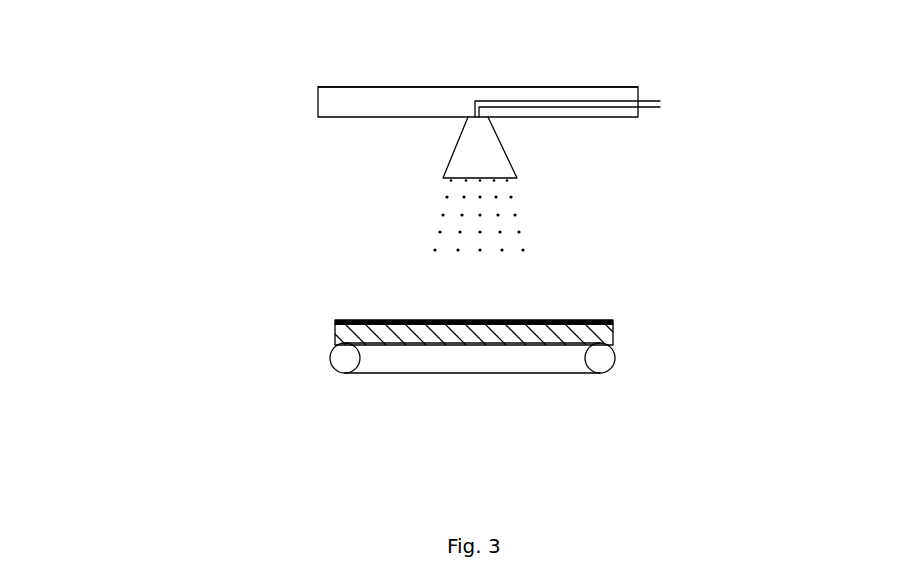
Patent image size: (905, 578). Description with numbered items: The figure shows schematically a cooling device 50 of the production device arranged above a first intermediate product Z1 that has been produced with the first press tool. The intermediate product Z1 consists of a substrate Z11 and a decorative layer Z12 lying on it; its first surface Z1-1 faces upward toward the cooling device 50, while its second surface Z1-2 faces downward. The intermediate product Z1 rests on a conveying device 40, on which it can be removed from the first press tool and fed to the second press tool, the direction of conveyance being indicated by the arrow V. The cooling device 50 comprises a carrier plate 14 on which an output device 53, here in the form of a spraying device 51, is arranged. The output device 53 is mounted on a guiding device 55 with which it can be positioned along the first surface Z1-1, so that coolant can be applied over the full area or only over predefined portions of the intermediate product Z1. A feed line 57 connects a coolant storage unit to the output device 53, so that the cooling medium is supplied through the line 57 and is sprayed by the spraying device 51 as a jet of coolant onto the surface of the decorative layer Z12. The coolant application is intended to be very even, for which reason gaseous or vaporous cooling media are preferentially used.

The conveying direction V is at (190, 65).
The cooling device 50 is at (650, 30).
The carrier plate 14 is at (345, 65).
The guiding device 55 is at (620, 88).
The feed line 57 is at (660, 105).
The spraying device 51 is at (627, 138).
The output device 53 is at (502, 162).
The intermediate product Z1 is at (645, 338).
The substrate Z11 is at (613, 335).
The decorative layer Z12 is at (613, 322).
The first surface Z1-1 is at (513, 318).
The second surface Z1-2 is at (490, 347).
The conveyor belt 40 is at (392, 373).